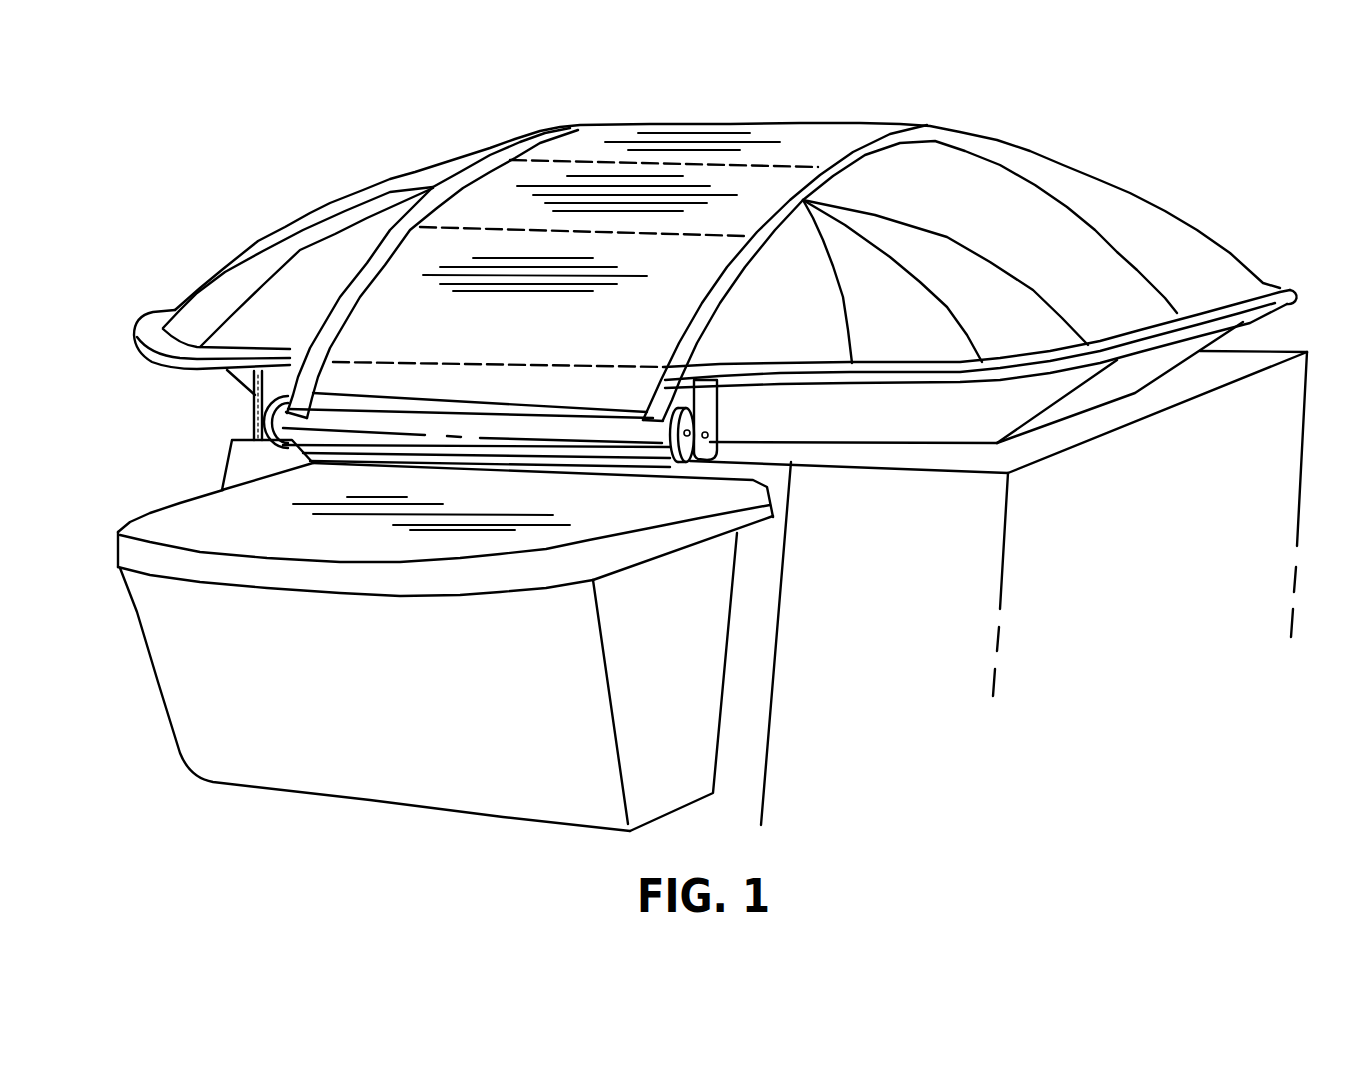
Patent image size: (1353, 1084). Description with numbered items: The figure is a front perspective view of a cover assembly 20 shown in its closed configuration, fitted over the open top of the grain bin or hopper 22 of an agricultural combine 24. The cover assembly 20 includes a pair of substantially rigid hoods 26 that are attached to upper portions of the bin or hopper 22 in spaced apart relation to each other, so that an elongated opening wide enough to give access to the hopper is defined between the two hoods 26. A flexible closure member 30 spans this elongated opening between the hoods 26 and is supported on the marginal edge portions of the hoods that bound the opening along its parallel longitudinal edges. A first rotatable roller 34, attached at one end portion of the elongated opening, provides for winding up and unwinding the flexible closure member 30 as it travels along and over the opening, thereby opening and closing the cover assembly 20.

The cover assembly 20 is at (1043, 128).
The grain bin or hopper 22 is at (884, 421).
The agricultural combine 24 is at (873, 669).
The substantially rigid hoods 26 is at (435, 170).
The flexible closure member 30 is at (698, 143).
The first roller 34 is at (333, 428).